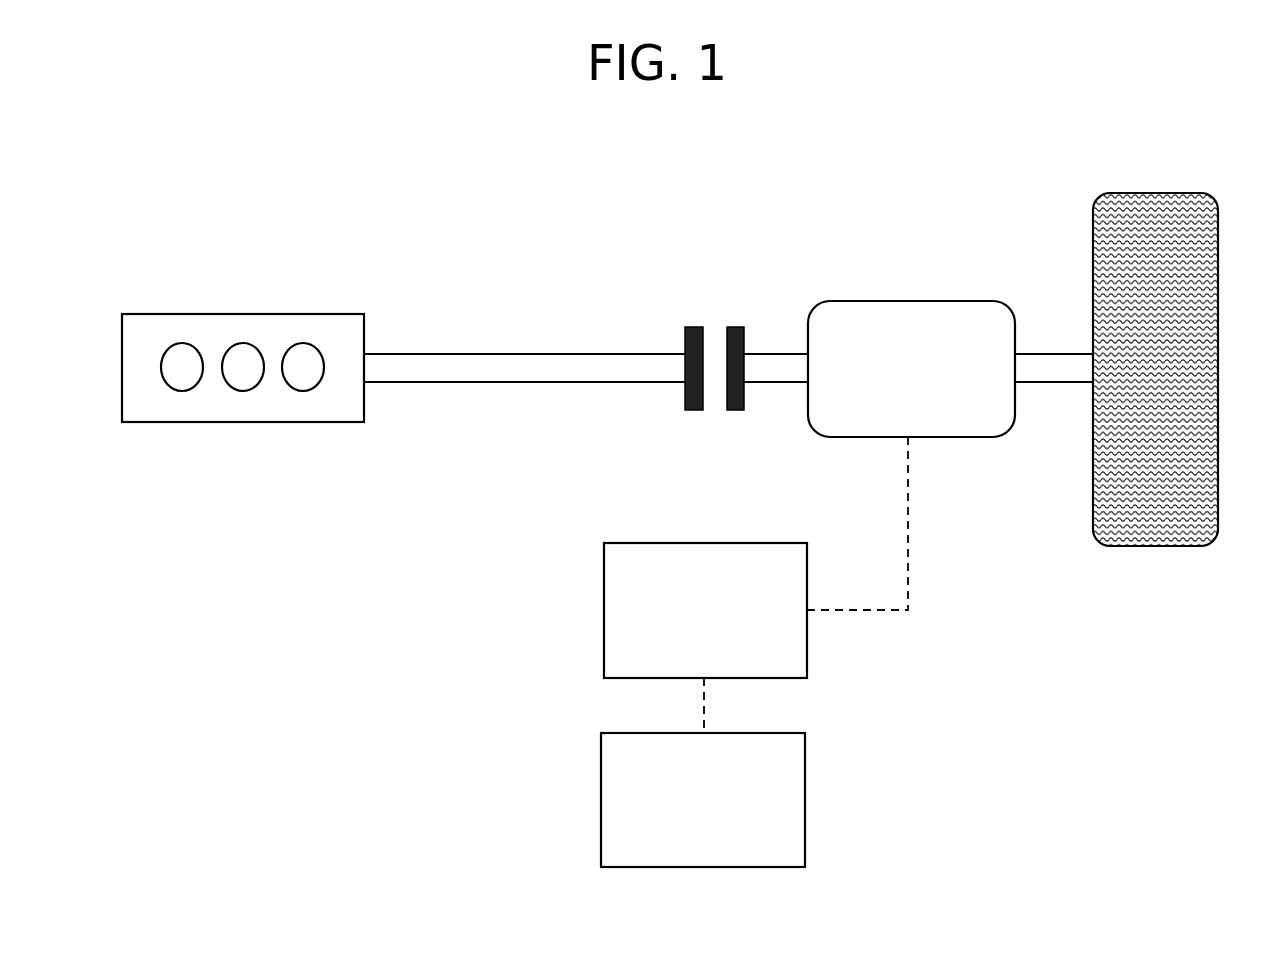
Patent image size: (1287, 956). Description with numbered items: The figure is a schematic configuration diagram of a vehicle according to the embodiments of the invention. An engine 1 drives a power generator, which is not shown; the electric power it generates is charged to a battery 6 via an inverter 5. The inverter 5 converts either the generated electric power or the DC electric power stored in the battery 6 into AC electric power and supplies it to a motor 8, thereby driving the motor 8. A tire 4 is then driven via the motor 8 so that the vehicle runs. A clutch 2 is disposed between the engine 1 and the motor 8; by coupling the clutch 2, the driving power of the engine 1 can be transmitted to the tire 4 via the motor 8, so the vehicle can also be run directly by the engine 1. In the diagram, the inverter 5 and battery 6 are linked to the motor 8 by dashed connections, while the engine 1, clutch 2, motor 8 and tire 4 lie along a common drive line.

The engine 1 is at (163, 322).
The clutch 2 is at (693, 327).
The tire 4 is at (1118, 210).
The inverter 5 is at (802, 635).
The battery 6 is at (798, 827).
The motor 8 is at (840, 326).